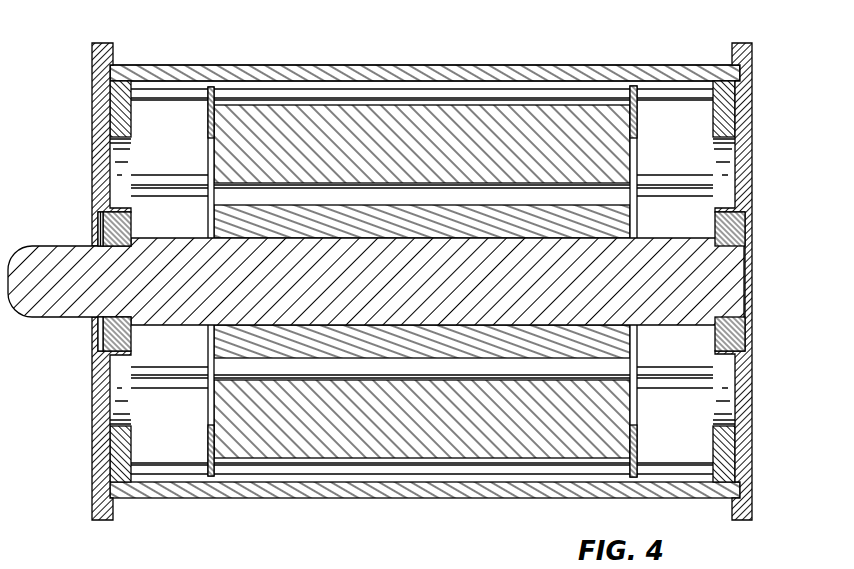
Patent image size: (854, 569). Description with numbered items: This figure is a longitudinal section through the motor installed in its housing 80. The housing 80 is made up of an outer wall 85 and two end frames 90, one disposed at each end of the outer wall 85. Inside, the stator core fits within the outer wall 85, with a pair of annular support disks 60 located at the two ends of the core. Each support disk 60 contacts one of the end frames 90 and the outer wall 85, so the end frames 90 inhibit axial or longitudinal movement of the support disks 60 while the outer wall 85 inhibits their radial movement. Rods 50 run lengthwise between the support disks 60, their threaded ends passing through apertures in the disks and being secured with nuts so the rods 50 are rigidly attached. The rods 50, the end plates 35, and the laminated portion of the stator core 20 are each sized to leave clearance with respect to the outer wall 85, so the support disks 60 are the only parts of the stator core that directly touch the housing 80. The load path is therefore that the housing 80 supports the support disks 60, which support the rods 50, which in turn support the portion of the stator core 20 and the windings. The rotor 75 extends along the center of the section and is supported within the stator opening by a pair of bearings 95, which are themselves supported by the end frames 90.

The portion of the stator core 20 is at (430, 435).
The end plates 35 is at (204, 447).
The rods 50 is at (353, 93).
The support disks 60 is at (124, 115).
The rotor 75 is at (62, 298).
The housing 80 is at (405, 278).
The outer wall 85 is at (445, 74).
The end frames 90 is at (92, 62).
The bearings 95 is at (118, 228).